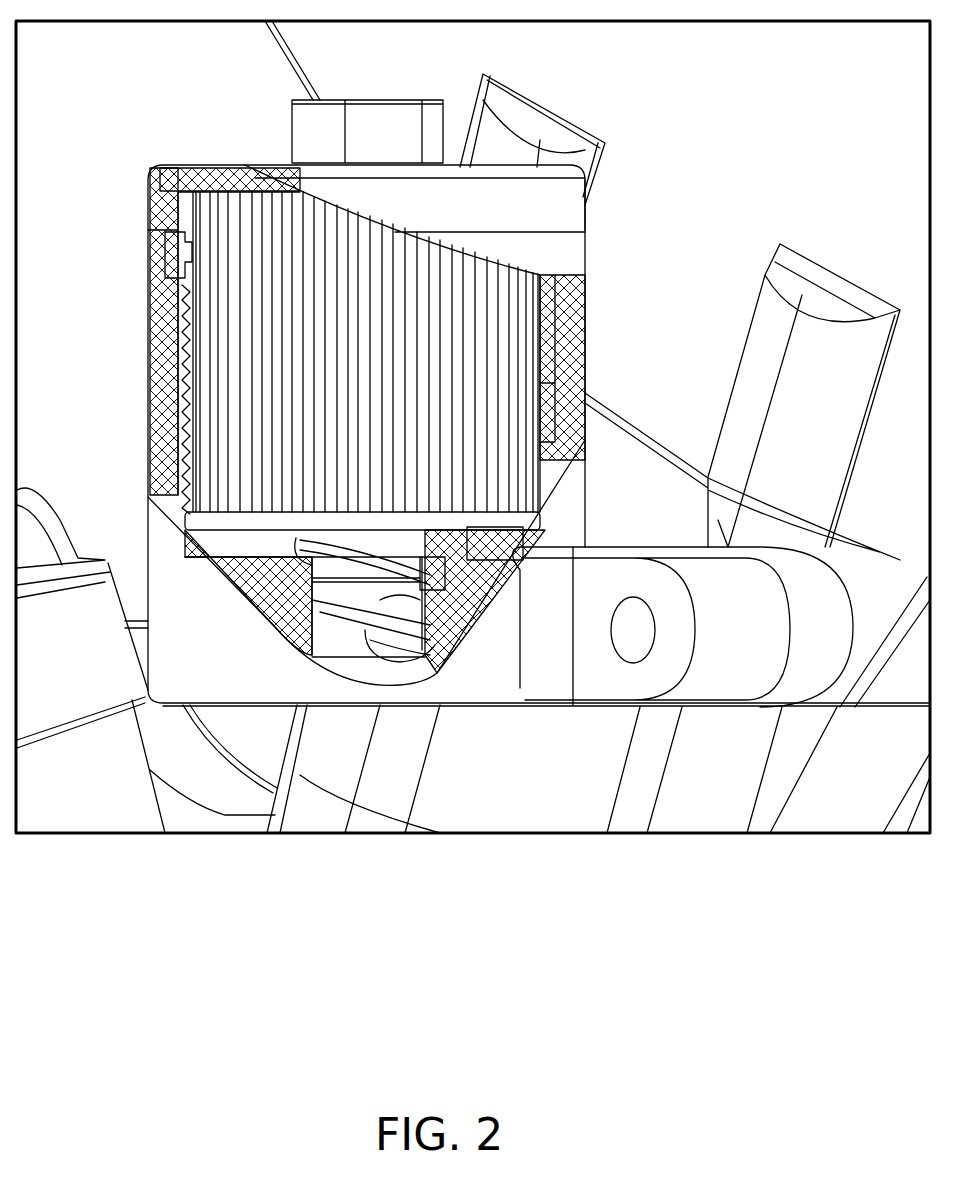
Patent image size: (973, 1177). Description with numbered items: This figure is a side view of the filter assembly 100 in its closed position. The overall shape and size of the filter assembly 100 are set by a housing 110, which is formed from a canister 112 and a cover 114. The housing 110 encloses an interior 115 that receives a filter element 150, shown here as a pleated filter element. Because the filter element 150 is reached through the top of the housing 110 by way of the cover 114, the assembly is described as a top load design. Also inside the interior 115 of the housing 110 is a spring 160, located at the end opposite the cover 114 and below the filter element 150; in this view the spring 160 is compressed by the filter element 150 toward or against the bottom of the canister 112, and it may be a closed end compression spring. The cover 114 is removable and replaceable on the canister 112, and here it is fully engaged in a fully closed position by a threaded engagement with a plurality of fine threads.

The filter assembly 100 is at (206, 124).
The housing 110 is at (150, 326).
The canister 112 is at (150, 266).
The cover 114 is at (585, 207).
The interior 115 is at (192, 413).
The filter element 150 is at (540, 400).
The spring 160 is at (360, 665).